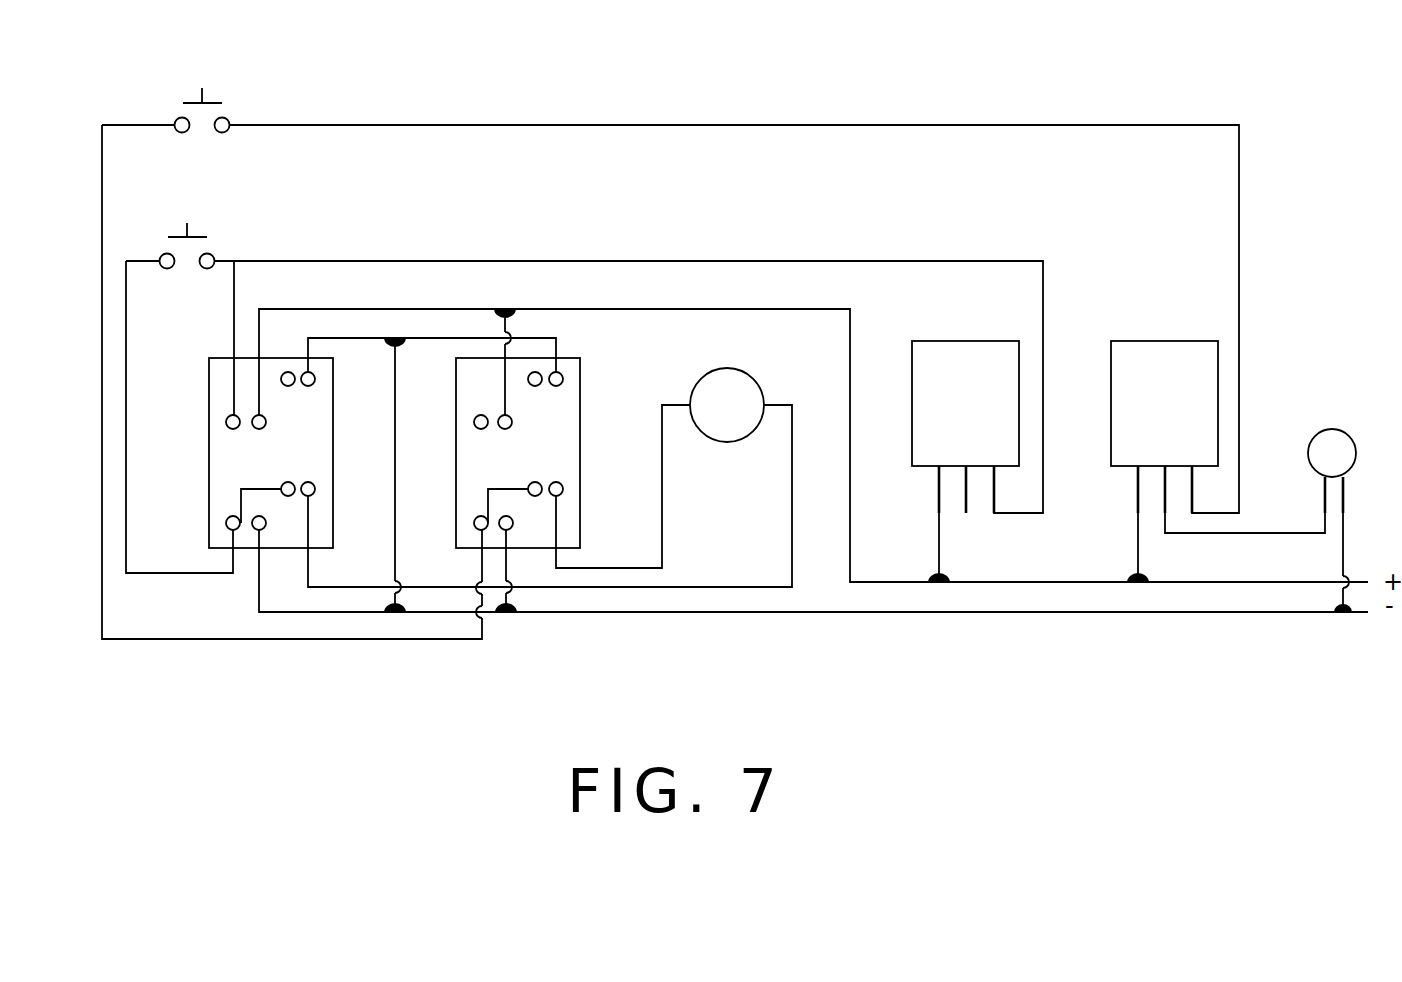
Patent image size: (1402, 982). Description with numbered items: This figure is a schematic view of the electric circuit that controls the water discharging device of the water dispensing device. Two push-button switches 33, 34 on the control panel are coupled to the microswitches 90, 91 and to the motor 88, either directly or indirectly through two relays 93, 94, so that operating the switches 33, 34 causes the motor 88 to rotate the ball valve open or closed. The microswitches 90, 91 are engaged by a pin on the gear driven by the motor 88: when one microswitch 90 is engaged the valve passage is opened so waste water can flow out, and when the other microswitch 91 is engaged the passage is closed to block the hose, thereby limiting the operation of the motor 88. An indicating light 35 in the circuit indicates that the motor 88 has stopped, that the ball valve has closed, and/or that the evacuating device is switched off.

The switch 33 is at (238, 221).
The switch 34 is at (249, 87).
The indicating light 35 is at (1333, 432).
The motor 88 is at (725, 380).
The microswitch 90 is at (962, 352).
The microswitch 91 is at (1160, 348).
The relay 93 is at (292, 535).
The relay 94 is at (530, 530).